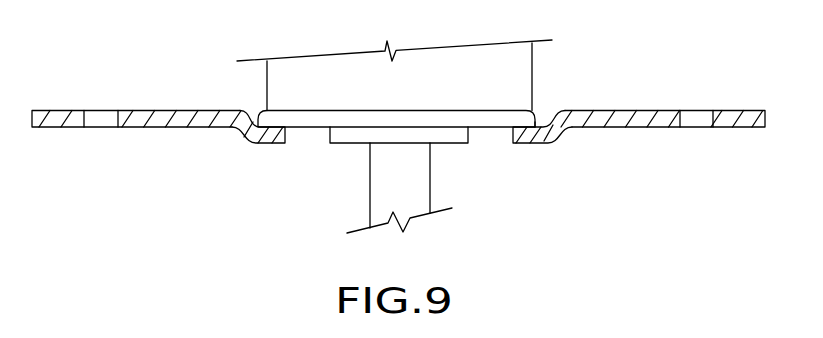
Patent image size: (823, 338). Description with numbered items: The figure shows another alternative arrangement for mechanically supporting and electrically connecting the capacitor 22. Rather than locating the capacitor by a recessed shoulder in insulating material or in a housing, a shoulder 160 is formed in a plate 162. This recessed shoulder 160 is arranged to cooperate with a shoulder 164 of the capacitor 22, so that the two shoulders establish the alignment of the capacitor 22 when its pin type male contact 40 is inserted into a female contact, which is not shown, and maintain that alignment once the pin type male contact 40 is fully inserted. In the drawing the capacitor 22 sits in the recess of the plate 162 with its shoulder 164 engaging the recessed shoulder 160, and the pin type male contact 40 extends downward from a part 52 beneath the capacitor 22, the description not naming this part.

The capacitor 22 is at (552, 40).
The pin type male contact 40 is at (374, 210).
The flange 52 is at (340, 142).
The recessed shoulder 160 is at (541, 112).
The plate 162 is at (665, 109).
The shoulder of the capacitor 164 is at (533, 122).